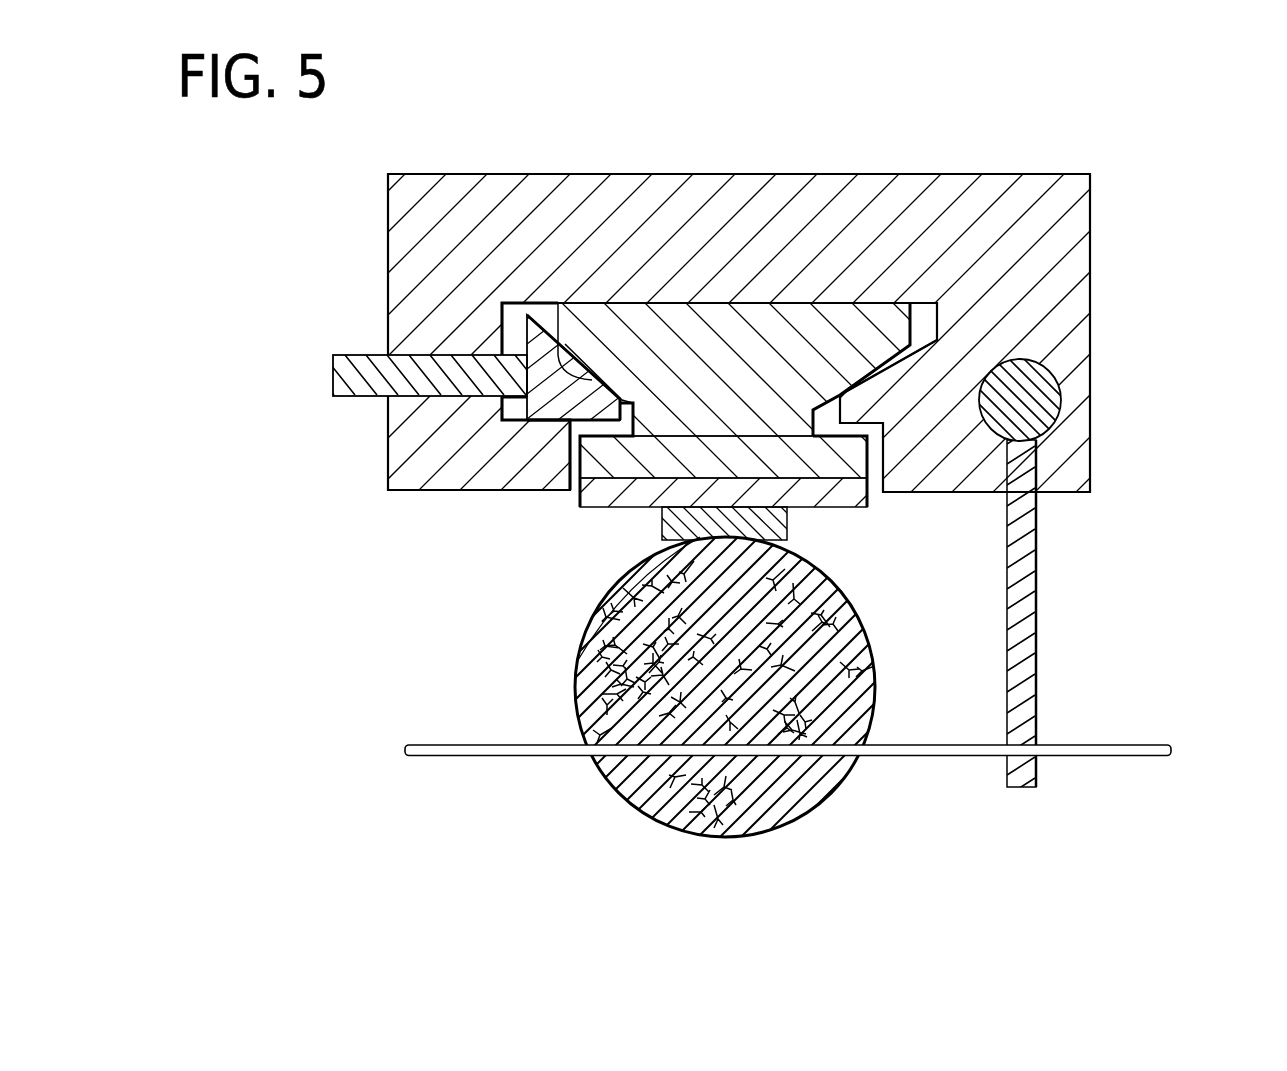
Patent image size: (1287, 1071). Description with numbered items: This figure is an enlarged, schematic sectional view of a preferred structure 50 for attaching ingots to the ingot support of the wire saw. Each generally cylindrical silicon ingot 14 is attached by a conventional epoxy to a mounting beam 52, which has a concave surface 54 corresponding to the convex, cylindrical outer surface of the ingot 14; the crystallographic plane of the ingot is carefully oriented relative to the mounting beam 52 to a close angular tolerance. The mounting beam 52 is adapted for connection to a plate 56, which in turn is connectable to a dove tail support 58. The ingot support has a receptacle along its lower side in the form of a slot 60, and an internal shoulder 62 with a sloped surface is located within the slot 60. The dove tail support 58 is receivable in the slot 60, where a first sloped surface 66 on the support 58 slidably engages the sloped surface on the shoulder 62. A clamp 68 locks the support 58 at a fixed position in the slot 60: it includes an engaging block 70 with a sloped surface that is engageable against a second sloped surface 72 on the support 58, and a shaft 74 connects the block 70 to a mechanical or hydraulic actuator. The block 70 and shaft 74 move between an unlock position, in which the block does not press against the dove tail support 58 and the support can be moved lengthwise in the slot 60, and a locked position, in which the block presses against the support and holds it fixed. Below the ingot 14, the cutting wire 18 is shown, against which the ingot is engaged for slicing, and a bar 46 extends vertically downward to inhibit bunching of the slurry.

The structure for attaching ingots 50 is at (1002, 108).
The engaging block 70 is at (510, 332).
The shaft 74 is at (352, 398).
The second sloped surface 72 is at (563, 300).
The dove tail support 58 is at (630, 300).
The internal shoulder 62 is at (858, 390).
The slot 60 is at (867, 453).
The plate 56 is at (578, 495).
The mounting beam 52 is at (660, 523).
The ingot 14 is at (576, 663).
The concave surface 54 is at (625, 583).
The bar 46 is at (1036, 556).
The wire 18 is at (1135, 757).
The first sloped surface 66 is at (905, 378).
The clamp 68 is at (447, 398).